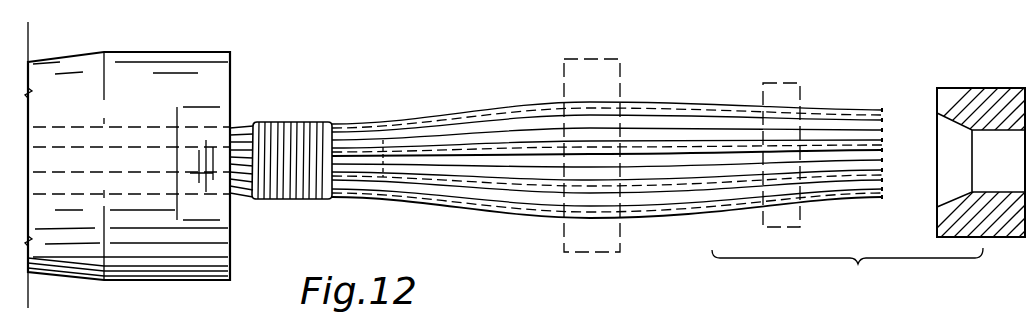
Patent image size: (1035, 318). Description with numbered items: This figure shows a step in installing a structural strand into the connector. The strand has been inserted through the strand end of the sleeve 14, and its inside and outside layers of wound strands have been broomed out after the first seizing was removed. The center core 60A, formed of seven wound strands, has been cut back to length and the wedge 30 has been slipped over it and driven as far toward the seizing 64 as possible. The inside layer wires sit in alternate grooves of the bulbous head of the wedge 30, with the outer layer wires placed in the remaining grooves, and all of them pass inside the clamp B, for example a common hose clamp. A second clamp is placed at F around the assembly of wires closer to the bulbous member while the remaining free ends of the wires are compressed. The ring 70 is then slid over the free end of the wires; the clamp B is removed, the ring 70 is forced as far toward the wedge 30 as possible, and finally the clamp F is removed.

The sleeve 14 is at (67, 52).
The seizing 64 is at (299, 122).
The wedge 30 is at (638, 132).
The center core 60A is at (685, 182).
The second clamp F is at (594, 241).
The clamp B is at (785, 218).
The ring 70 is at (985, 88).